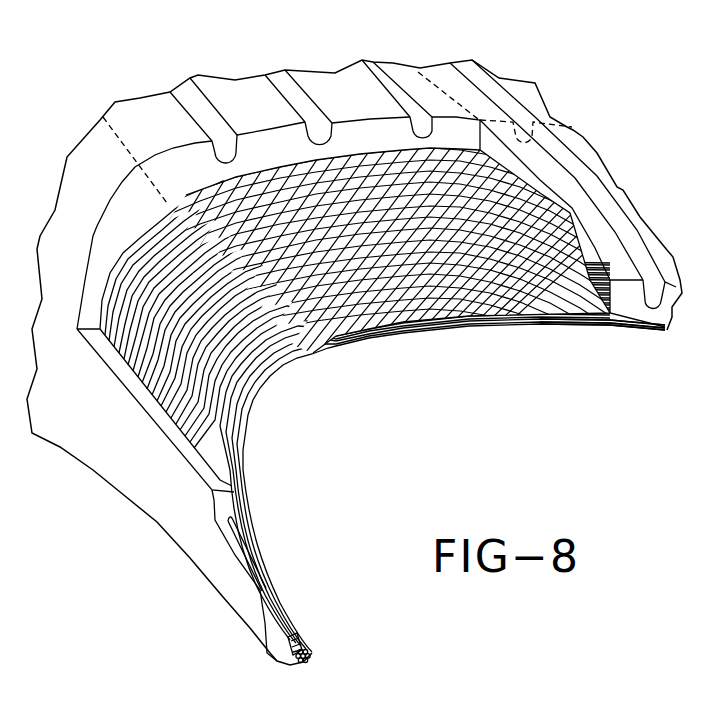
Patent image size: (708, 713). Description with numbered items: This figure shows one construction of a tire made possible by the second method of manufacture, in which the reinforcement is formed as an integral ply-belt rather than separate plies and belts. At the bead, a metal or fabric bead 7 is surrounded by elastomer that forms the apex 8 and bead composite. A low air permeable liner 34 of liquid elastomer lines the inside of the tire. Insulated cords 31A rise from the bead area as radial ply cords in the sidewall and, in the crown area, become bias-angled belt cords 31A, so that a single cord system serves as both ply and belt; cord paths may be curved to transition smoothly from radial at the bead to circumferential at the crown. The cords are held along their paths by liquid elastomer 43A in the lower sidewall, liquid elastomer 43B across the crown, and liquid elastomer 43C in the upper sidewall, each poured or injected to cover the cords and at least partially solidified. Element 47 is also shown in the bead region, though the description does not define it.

The insulated cords 31A is at (232, 388).
The low air permeable liner 34 is at (636, 327).
The liquid elastomer 43A is at (577, 152).
The liquid elastomer 43B is at (281, 142).
The liquid elastomer 43C is at (123, 215).
The chafer strip 47 is at (265, 588).
The apex 8 is at (285, 622).
The bead 7 is at (307, 663).